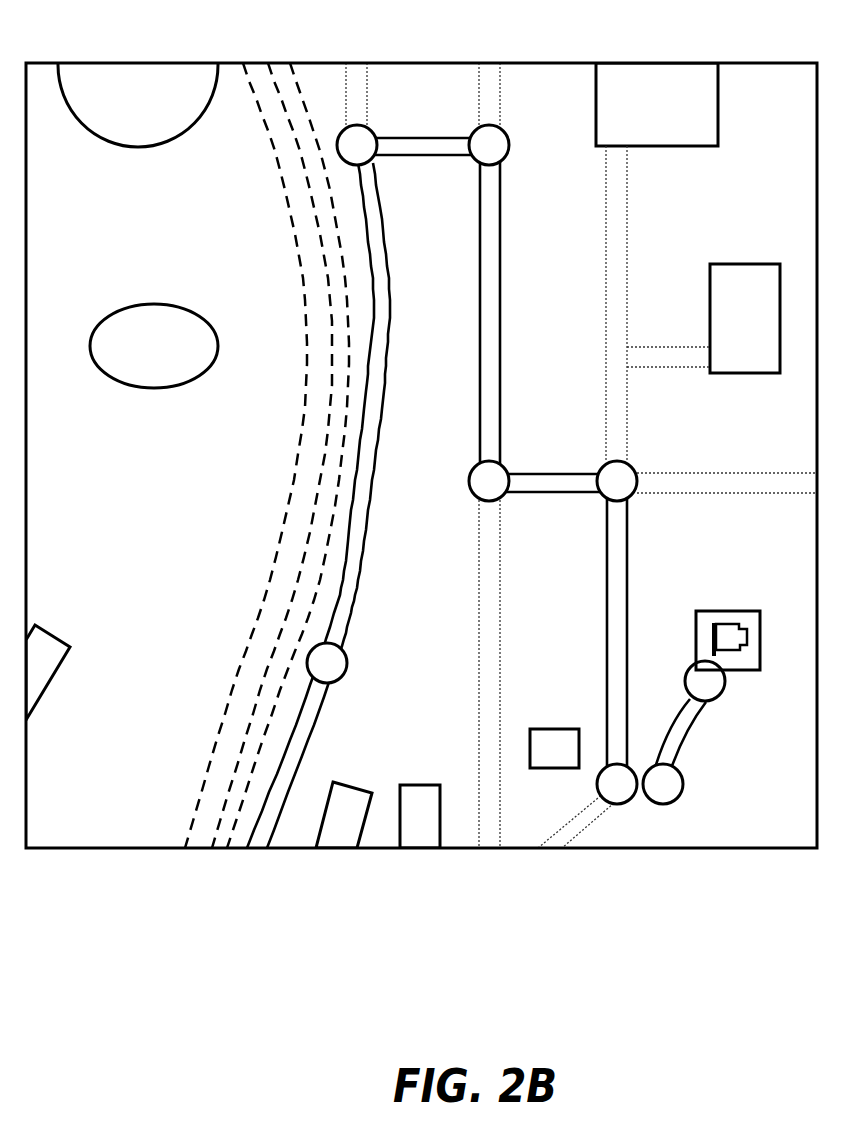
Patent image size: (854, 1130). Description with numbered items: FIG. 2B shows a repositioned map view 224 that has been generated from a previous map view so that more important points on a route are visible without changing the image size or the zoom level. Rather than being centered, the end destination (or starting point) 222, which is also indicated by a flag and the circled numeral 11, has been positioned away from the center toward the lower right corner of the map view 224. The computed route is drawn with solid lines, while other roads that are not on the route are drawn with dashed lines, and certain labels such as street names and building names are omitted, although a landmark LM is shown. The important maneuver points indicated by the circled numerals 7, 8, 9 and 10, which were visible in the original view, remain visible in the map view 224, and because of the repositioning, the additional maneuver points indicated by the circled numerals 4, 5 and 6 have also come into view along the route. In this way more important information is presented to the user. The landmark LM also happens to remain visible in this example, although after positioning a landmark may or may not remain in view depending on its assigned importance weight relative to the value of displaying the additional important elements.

The map view 224 is at (421, 424).
The end destination 222 is at (722, 697).
The maneuver point 4 is at (327, 663).
The maneuver point 5 is at (357, 145).
The maneuver point 6 is at (489, 145).
The maneuver point 7 is at (489, 481).
The maneuver point 8 is at (617, 481).
The maneuver point 9 is at (617, 784).
The maneuver point 10 is at (663, 784).
The end destination 11 is at (705, 681).